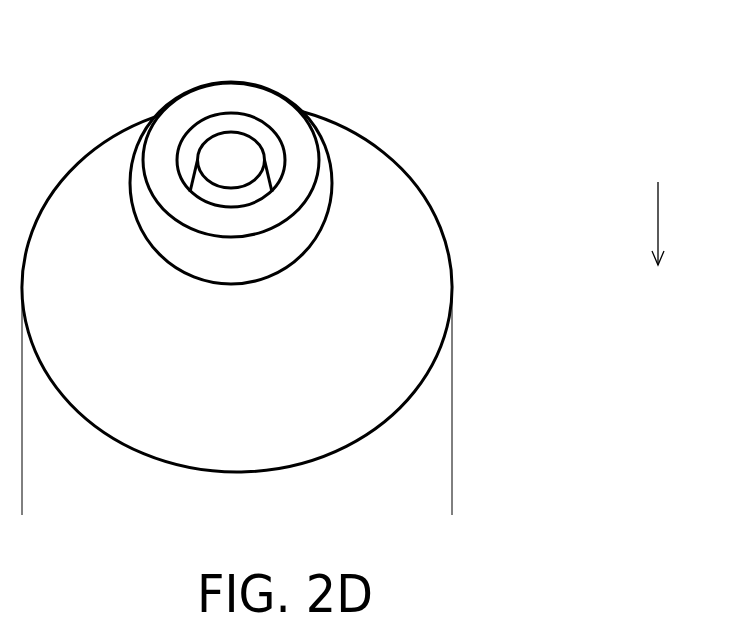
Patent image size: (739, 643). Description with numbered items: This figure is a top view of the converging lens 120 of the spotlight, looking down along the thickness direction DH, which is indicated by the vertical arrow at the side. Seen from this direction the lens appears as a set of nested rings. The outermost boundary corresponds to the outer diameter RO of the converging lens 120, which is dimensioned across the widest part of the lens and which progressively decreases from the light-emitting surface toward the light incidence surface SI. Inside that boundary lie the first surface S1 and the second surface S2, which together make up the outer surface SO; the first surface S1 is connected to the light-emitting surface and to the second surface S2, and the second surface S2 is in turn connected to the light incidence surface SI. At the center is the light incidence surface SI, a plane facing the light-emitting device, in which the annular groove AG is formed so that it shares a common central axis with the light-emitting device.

The first surface S1 is at (380, 277).
The second surface S2 is at (322, 193).
The outer surface SO is at (553, 196).
The light incidence surface SI is at (290, 123).
The annular groove AG is at (192, 153).
The outer diameter RO is at (452, 508).
The thickness direction DH is at (660, 242).
The converging lens 120 is at (587, 520).